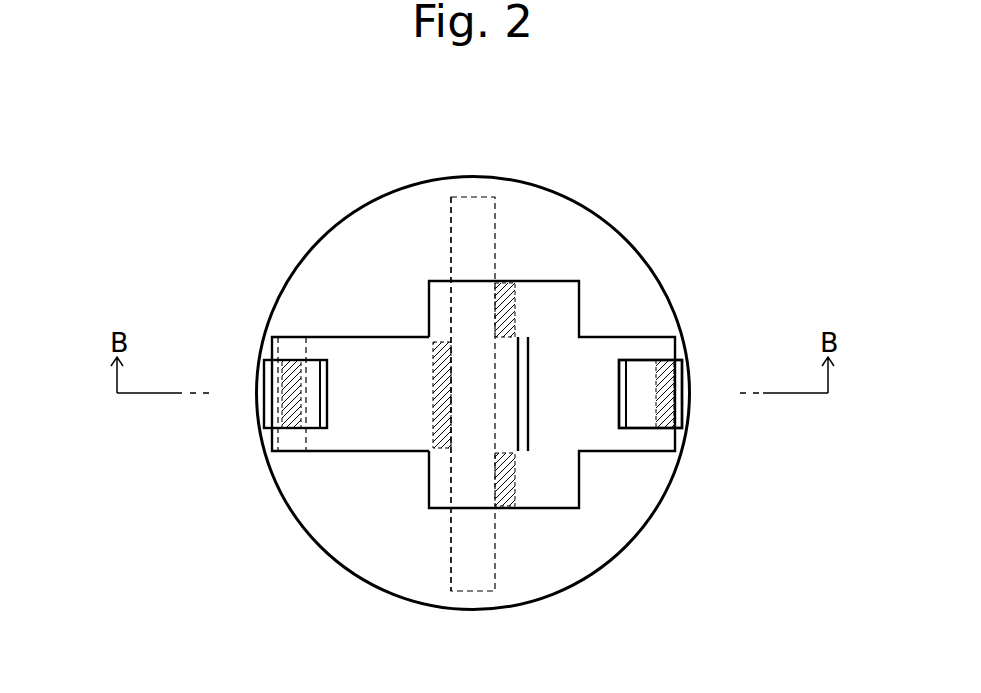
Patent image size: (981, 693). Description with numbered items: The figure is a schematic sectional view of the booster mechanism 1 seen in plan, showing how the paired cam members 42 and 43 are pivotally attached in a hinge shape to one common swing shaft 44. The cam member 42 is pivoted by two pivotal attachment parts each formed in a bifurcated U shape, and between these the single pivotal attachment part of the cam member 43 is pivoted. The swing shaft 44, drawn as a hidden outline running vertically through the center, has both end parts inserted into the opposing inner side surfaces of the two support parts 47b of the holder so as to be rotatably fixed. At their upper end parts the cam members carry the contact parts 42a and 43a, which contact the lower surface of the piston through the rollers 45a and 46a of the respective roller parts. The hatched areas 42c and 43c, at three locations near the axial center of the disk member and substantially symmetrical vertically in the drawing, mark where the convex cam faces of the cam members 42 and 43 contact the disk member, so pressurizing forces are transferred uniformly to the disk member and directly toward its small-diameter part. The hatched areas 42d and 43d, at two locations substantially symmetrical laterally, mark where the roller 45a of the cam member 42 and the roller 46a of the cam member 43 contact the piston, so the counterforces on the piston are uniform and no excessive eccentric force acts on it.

The booster mechanism 1 is at (612, 275).
The cam member 42 is at (555, 477).
The contact part 42a is at (640, 370).
The area 42c is at (515, 302).
The area 42d is at (672, 375).
The cam member 43 is at (350, 430).
The contact part 43a is at (288, 437).
The area 43c is at (433, 387).
The area 43d is at (283, 380).
The swing shaft 44 is at (470, 565).
The roller 45a is at (640, 403).
The roller 46a is at (268, 410).
The support part 47b is at (438, 208).